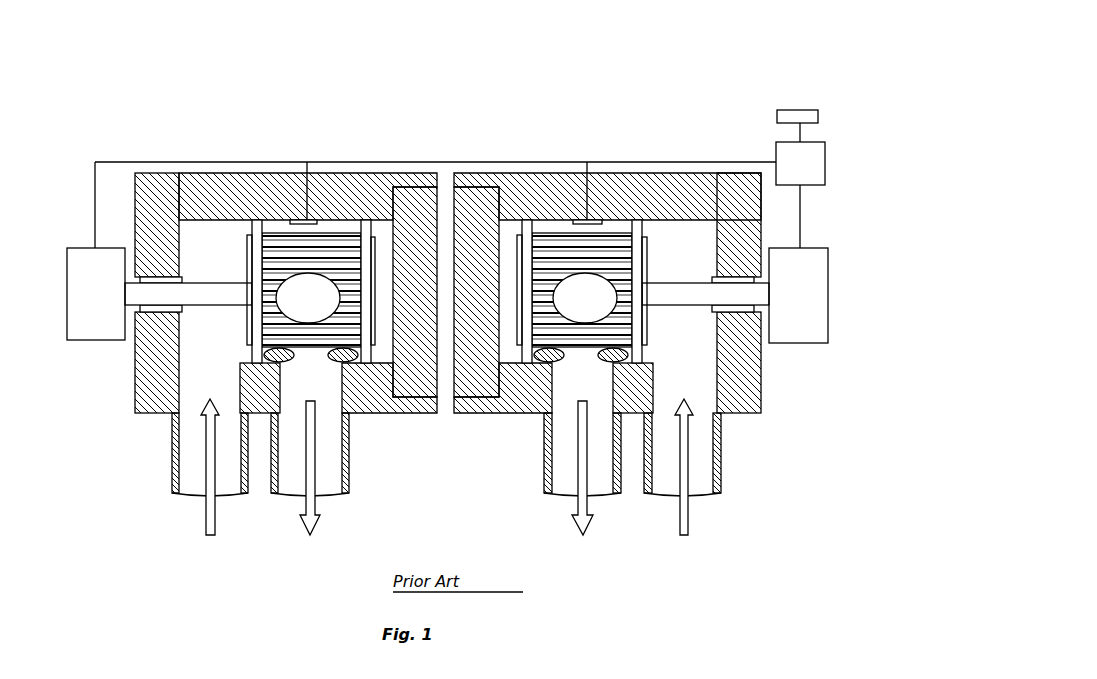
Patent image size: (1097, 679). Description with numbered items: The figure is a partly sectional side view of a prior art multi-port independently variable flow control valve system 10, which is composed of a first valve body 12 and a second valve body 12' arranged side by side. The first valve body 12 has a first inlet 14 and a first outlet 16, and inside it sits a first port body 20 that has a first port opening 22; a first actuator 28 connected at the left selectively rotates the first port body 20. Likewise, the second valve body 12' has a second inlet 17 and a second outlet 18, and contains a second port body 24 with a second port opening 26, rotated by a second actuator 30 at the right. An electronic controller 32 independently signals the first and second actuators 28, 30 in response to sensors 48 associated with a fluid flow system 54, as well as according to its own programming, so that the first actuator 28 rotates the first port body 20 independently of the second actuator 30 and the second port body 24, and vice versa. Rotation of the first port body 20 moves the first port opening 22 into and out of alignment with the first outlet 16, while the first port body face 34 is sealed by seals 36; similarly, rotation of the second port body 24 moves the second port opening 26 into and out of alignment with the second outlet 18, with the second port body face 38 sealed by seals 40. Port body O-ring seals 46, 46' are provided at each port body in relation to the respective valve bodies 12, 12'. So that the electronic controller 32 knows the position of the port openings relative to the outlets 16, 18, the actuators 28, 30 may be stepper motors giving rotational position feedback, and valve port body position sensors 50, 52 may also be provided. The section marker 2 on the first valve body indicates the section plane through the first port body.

The multi-port independently variable flow control valve system 10 is at (490, 86).
The first valve body 12 is at (281, 243).
The second valve body 12' is at (611, 245).
The first inlet 14 is at (193, 392).
The first outlet 16 is at (325, 403).
The second inlet 17 is at (703, 393).
The second outlet 18 is at (567, 403).
The first port body 20 is at (329, 228).
The first port opening 22 is at (318, 308).
The second port body 24 is at (562, 228).
The second port opening 26 is at (595, 308).
The first actuator 28 is at (100, 343).
The second actuator 30 is at (793, 345).
The electronic controller 32 is at (776, 152).
The first port body face 34 is at (352, 320).
The seals 36 is at (292, 366).
The second port body face 38 is at (540, 322).
The seals 40 is at (600, 364).
The port body O-ring seals 46 is at (308, 234).
The port body O-ring seals 46' is at (586, 235).
The sensors 48 is at (814, 110).
The valve port body position sensor 50 is at (305, 221).
The valve port body position sensor 52 is at (588, 219).
The fluid flow system 54 is at (322, 558).
The section line for FIG. 2 is at (248, 232).